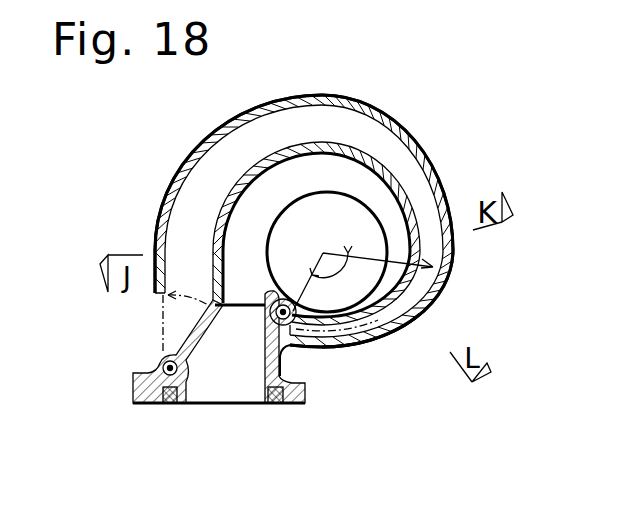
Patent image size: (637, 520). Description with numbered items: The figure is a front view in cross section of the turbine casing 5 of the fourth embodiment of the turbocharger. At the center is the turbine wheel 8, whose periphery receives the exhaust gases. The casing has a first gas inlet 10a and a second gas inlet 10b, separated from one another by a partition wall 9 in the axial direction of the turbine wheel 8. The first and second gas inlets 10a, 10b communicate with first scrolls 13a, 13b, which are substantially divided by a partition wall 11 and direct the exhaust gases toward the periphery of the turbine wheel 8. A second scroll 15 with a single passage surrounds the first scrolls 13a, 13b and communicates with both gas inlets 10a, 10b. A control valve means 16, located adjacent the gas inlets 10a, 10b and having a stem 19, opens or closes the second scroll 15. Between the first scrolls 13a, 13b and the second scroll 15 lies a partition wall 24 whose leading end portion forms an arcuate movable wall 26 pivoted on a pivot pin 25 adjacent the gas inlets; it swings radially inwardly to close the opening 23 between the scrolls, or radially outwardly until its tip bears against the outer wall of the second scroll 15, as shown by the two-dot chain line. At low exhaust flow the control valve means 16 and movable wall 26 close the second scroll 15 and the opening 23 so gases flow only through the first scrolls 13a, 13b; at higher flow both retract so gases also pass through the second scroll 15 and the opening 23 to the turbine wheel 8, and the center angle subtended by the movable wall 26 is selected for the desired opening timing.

The turbine casing 5 is at (461, 181).
The turbine wheel 8 is at (297, 223).
The partition wall 9 is at (218, 360).
The first gas inlet 10a is at (226, 406).
The second gas inlet 10b is at (219, 434).
The partition wall 11 is at (245, 217).
The first scroll 13a is at (377, 190).
The first scroll 13b is at (429, 215).
The second scroll 15 is at (342, 128).
The control valve means 16 is at (200, 318).
The stem 19 is at (163, 367).
The opening 23 is at (405, 335).
The partition wall 24 is at (380, 187).
The pivot pin 25 is at (290, 325).
The movable wall 26 is at (367, 333).